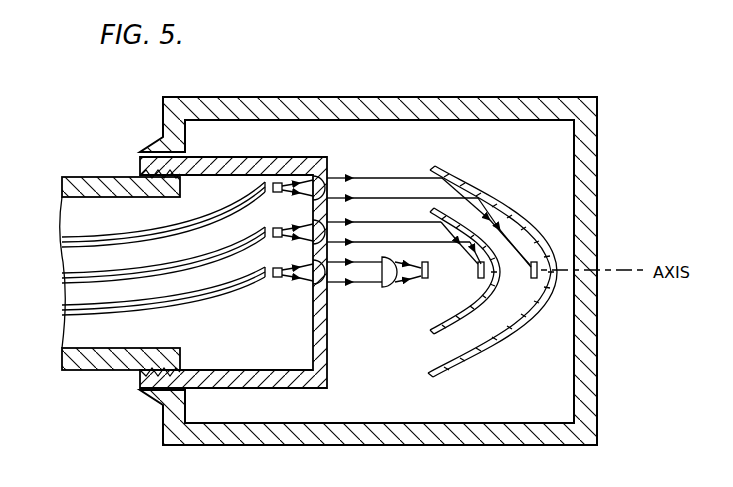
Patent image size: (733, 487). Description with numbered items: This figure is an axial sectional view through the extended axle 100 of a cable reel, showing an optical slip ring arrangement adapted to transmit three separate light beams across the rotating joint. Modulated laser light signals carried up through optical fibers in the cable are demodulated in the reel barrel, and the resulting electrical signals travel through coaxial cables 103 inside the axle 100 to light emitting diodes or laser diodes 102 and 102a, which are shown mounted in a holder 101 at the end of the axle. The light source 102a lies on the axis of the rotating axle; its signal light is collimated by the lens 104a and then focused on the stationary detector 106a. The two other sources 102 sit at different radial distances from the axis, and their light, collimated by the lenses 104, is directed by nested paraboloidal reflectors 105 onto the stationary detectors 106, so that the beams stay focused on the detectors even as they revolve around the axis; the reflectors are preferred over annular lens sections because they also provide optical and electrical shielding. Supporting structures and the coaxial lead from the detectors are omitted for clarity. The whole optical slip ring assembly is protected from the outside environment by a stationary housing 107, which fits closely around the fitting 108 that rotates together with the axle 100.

The axle 100 is at (100, 176).
The collar / lens holder 101 is at (327, 178).
The light sources 102 is at (282, 227).
The light source 102a is at (280, 279).
The coaxial cables 103 is at (64, 312).
The collimating lens 104 is at (328, 193).
The lens 104a is at (328, 246).
The nested paraboloidal reflectors 105 is at (444, 330).
The stationary detectors 106 is at (533, 281).
The stationary detector 106a is at (425, 281).
The stationary housing 107 is at (402, 98).
The fitting 108 is at (138, 374).